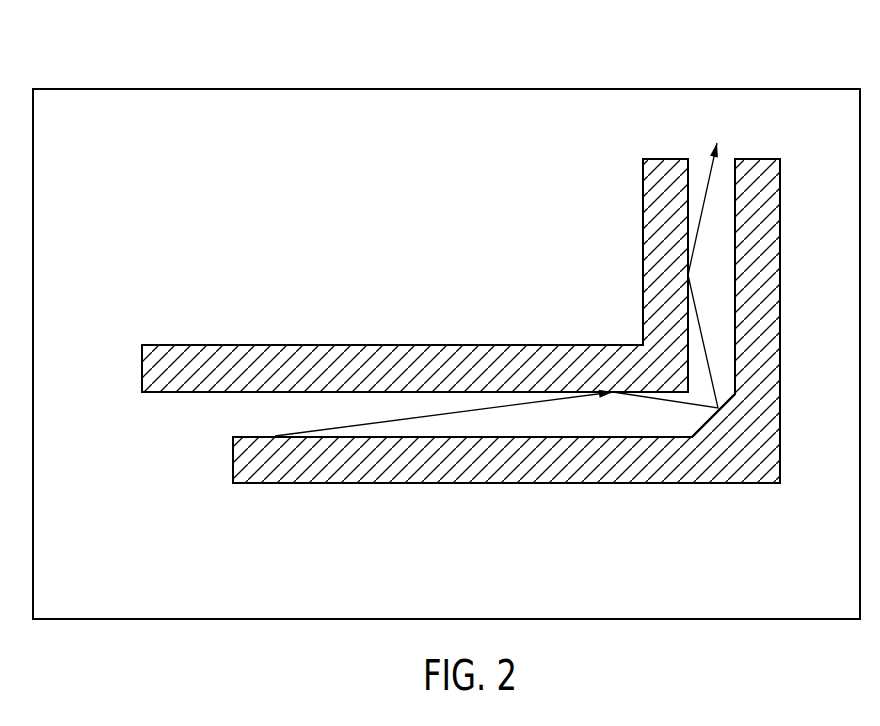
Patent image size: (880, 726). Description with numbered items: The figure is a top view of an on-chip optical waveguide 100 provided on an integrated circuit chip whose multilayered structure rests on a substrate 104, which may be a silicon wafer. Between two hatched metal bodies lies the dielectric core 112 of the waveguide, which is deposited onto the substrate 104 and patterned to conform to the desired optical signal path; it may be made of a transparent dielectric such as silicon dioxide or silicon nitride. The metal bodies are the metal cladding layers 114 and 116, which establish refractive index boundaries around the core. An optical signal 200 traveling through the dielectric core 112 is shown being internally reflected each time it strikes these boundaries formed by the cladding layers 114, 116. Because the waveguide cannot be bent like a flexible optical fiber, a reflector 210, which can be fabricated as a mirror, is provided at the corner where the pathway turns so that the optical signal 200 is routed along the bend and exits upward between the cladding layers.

The on-chip optical waveguide 100 is at (446, 323).
The substrate 104 is at (142, 105).
The dielectric core 112 is at (378, 400).
The metal cladding layer 114 is at (488, 355).
The metal cladding layer 116 is at (251, 478).
The optical signal 200 is at (703, 338).
The reflector 210 is at (700, 443).